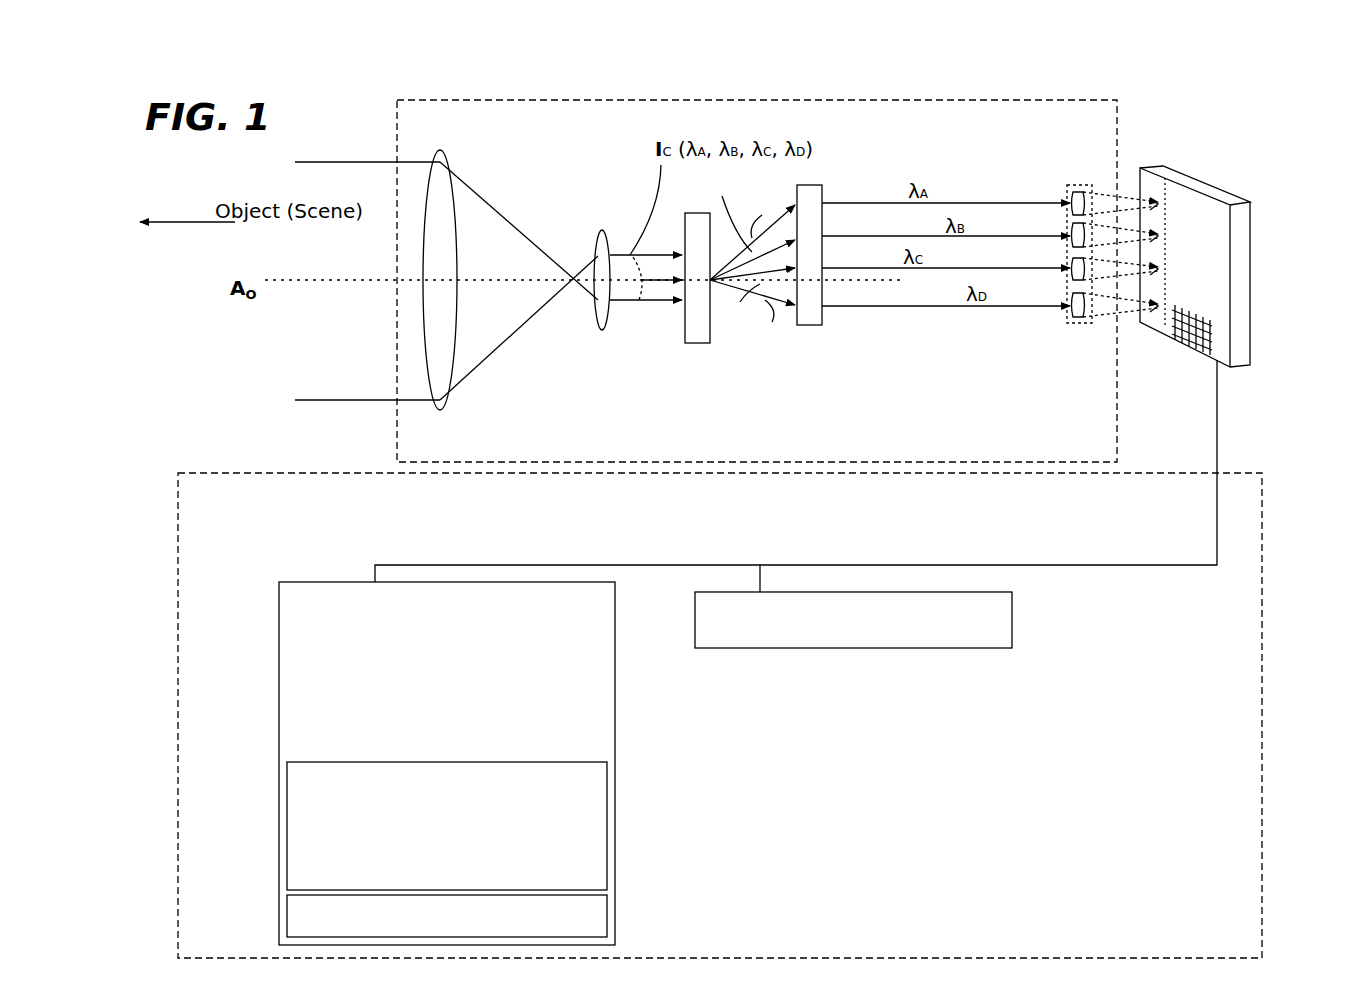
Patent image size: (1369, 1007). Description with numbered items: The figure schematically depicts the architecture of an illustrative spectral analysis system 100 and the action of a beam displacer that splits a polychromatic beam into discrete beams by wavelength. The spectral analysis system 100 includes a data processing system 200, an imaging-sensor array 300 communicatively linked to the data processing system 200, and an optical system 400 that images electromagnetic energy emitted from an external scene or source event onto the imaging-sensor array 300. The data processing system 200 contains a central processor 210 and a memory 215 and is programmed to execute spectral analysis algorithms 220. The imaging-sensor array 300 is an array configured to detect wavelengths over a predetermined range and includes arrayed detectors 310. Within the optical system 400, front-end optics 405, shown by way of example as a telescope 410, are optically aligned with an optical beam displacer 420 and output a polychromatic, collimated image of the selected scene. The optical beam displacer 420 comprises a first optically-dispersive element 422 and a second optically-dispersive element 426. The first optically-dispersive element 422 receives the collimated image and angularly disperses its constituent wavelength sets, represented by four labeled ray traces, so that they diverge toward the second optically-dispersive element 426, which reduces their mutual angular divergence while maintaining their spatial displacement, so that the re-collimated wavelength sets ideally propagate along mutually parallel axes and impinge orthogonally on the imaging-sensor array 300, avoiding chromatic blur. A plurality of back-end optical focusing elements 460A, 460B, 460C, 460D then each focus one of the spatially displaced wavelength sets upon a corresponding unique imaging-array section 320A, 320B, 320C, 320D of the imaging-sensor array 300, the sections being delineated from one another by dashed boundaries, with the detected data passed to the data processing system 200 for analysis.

The spectral analysis system 100 is at (300, 448).
The optical system 400 is at (757, 281).
The front-end optics 405 is at (622, 152).
The telescope 410 is at (452, 281).
The first optically-dispersive element 422 is at (683, 320).
The optical beam displacer 420 is at (866, 348).
The second optically-dispersive element 426 is at (812, 315).
The optical focusing element 460A is at (1070, 200).
The optical focusing element 460B is at (1072, 235).
The optical focusing element 460C is at (1072, 268).
The optical focusing element 460D is at (1065, 315).
The imaging-sensor array 300 is at (1240, 365).
The imaging-array section 320A is at (1142, 180).
The imaging-array section 320B is at (1148, 222).
The imaging-array section 320C is at (1150, 282).
The imaging-array section 320D is at (1140, 322).
The arrayed detectors 310 is at (1186, 340).
The data processing system 200 is at (664, 763).
The central processor 210 is at (853, 620).
The memory 215 is at (605, 752).
The spectral analysis algorithms 220 is at (447, 826).